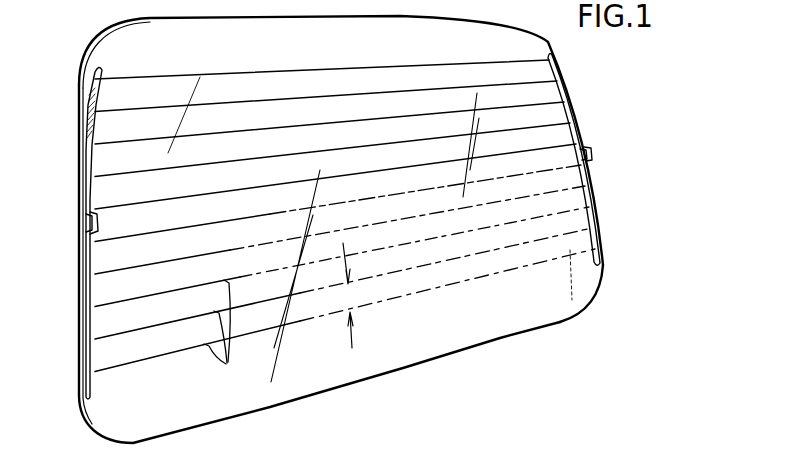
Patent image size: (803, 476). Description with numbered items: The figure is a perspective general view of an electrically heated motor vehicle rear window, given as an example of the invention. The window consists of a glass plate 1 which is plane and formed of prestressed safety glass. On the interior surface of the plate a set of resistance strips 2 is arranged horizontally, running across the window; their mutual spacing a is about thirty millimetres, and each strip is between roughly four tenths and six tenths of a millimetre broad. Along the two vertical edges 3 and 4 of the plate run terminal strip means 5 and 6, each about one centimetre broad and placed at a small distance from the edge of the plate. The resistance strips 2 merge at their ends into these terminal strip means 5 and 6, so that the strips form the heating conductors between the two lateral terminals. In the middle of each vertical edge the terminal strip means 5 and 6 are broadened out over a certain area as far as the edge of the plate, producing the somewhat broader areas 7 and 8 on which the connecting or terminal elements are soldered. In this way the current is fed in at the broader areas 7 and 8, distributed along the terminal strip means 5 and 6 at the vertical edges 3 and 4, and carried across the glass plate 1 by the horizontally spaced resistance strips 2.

The glass plate 1 is at (167, 425).
The resistance strips 2 is at (227, 364).
The vertical edge 3 is at (78, 405).
The vertical edge 4 is at (605, 276).
The terminal strip means 5 is at (97, 87).
The terminal strip means 6 is at (571, 92).
The broader area 7 is at (84, 228).
The broader area 8 is at (589, 154).
The mutual spacing a is at (348, 295).